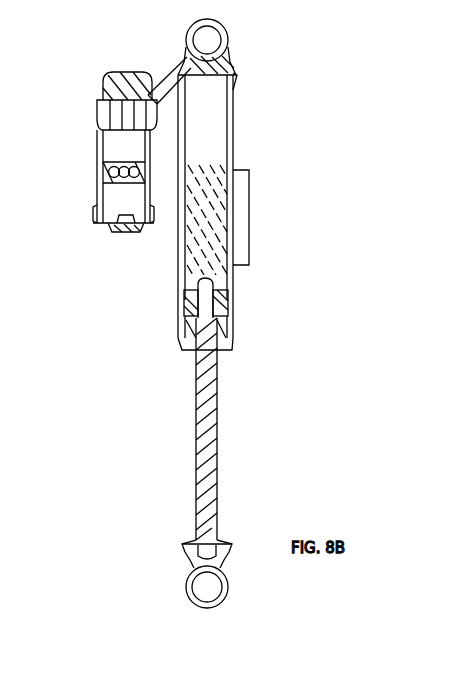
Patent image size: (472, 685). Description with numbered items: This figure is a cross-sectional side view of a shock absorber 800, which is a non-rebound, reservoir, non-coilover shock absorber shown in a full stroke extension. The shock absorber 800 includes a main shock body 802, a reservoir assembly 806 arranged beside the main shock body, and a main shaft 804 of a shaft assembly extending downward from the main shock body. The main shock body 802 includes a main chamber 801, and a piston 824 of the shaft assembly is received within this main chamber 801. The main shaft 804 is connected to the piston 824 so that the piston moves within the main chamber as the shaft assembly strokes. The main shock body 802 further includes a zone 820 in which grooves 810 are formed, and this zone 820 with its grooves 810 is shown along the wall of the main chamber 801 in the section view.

The shock absorber 800 is at (298, 129).
The main chamber 801 is at (213, 106).
The main shock body 802 is at (233, 137).
The main shaft 804 is at (196, 477).
The reservoir assembly 806 is at (104, 148).
The grooves 810 is at (233, 210).
The zone 820 is at (252, 217).
The piston 824 is at (230, 302).